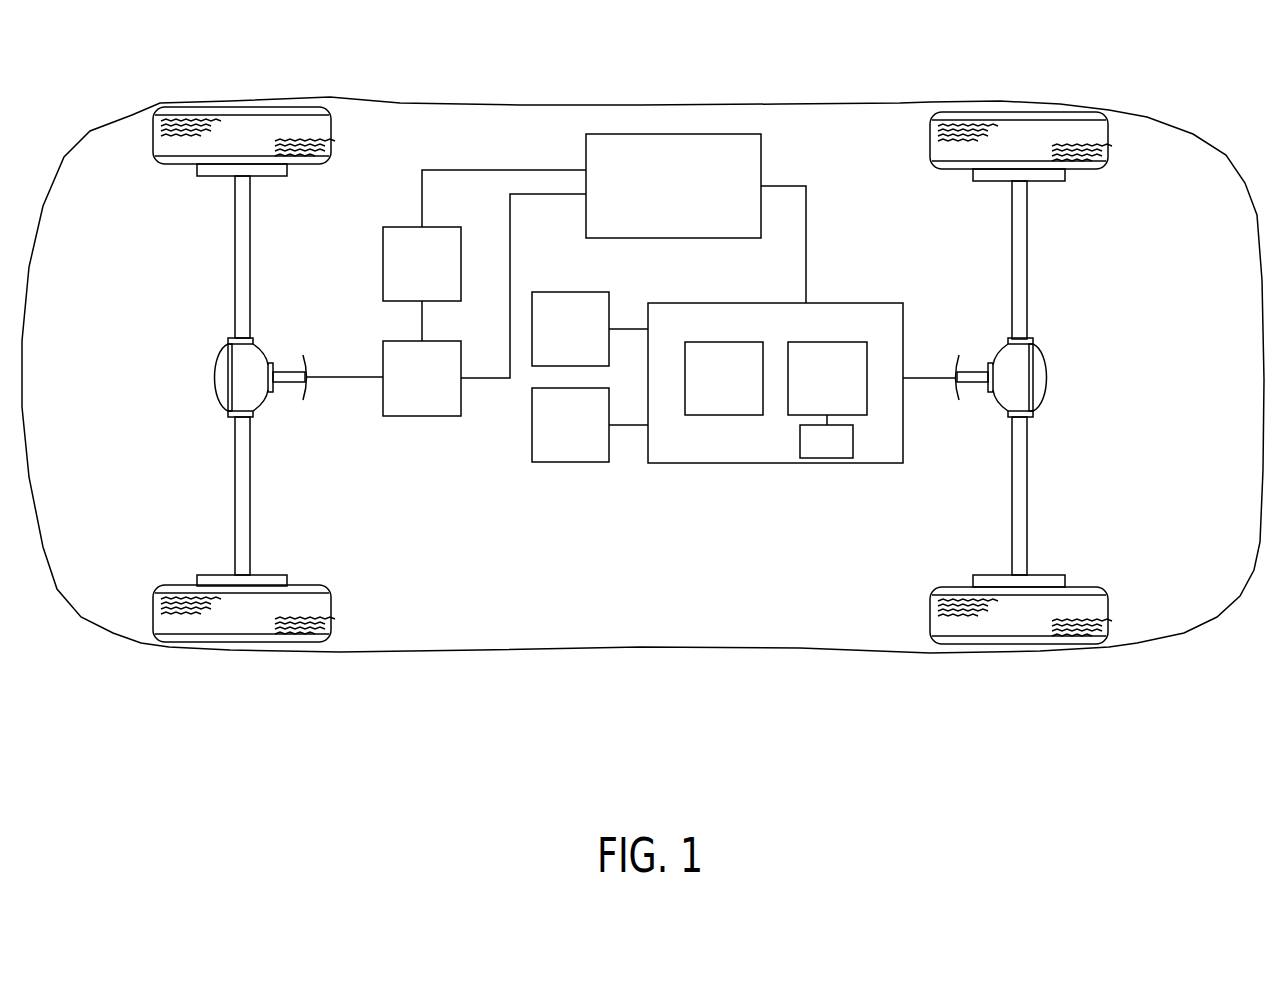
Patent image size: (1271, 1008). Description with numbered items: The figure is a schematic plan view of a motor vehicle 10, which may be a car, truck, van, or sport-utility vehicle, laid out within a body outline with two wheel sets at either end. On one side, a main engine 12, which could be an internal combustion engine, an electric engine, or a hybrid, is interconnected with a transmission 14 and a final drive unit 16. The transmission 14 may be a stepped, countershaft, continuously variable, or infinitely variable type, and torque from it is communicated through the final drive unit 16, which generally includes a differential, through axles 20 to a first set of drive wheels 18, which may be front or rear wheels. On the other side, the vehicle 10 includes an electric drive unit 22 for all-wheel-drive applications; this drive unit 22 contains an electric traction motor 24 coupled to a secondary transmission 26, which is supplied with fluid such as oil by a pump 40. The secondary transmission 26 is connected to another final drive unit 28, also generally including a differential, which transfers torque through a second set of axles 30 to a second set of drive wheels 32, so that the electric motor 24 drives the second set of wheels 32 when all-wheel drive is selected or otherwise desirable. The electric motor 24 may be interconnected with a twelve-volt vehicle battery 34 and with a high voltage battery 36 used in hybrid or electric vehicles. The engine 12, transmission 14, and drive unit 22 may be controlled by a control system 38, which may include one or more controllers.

The motor vehicle 10 is at (677, 680).
The main engine 12 is at (433, 278).
The transmission 14 is at (433, 392).
The final drive unit 16 is at (213, 377).
The first set of drive wheels 18 is at (243, 125).
The axles 20 is at (235, 263).
The electric drive unit 22 is at (775, 419).
The electric traction motor 24 is at (735, 393).
The secondary transmission 26 is at (838, 393).
The final drive unit 28 is at (1047, 380).
The second set of axles 30 is at (1028, 268).
The second set of drive wheels 32 is at (1018, 128).
The 12 Volt vehicle battery 34 is at (581, 343).
The high voltage battery 36 is at (581, 439).
The control system 38 is at (684, 198).
The pump 40 is at (838, 453).